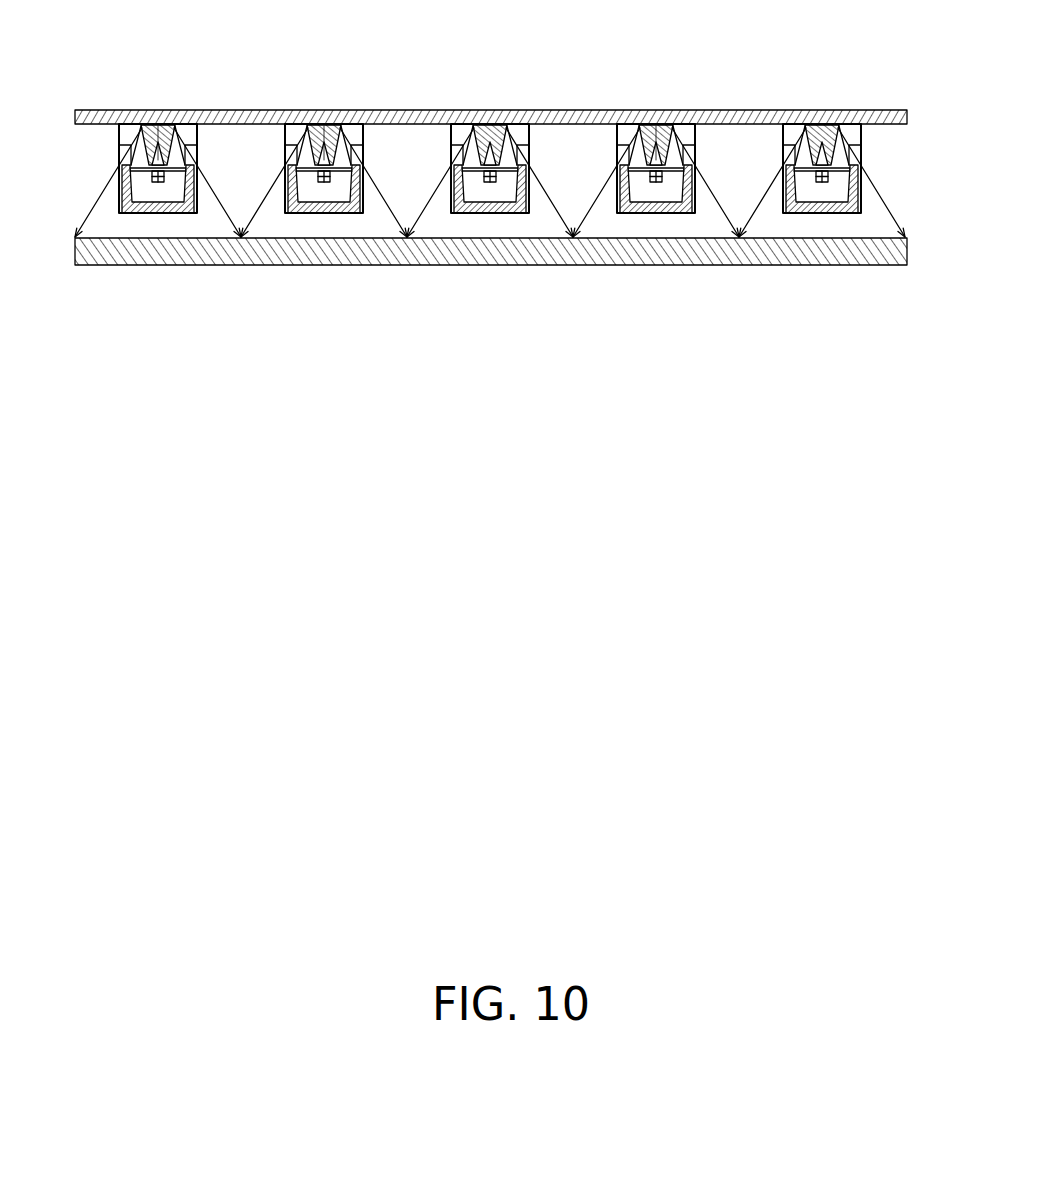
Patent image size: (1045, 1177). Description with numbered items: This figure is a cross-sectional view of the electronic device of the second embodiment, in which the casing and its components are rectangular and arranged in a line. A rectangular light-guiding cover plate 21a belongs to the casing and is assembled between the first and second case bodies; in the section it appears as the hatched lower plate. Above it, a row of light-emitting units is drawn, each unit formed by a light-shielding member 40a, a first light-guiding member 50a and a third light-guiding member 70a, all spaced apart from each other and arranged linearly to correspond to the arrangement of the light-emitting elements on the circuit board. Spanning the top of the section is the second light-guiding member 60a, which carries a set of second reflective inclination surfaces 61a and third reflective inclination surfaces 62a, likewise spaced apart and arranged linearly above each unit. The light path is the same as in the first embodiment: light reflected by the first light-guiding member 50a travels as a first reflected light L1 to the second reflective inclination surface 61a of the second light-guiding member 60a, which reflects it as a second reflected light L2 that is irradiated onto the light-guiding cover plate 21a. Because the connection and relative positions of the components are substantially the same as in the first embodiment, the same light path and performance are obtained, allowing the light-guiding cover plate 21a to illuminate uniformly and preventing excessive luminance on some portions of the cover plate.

The light-guiding cover plate 21a is at (402, 265).
The light-shielding member 40a is at (145, 213).
The first light-guiding member 50a is at (164, 182).
The second light-guiding member 60a is at (447, 110).
The second reflective inclination surface 61a is at (170, 130).
The third reflective inclination surface 62a is at (138, 138).
The third light-guiding member 70a is at (121, 208).
The first reflected light L1 is at (158, 128).
The second reflected light L2 is at (215, 182).